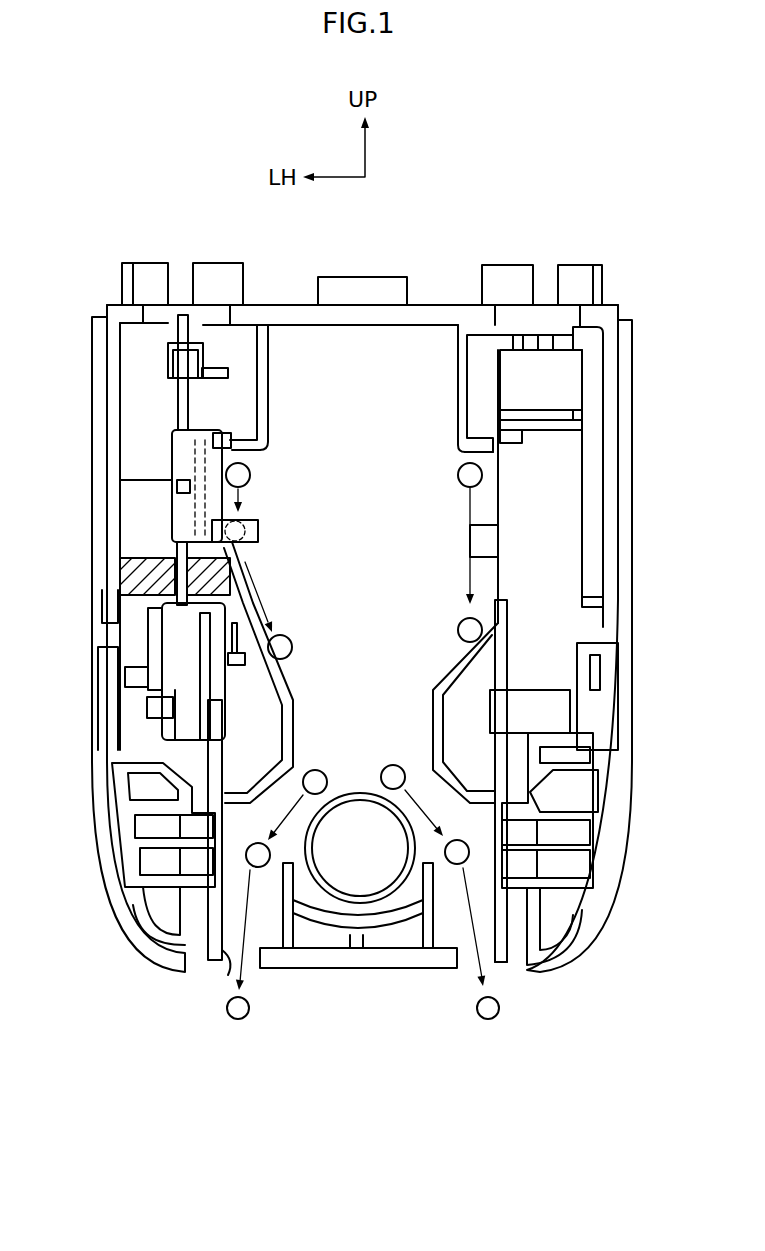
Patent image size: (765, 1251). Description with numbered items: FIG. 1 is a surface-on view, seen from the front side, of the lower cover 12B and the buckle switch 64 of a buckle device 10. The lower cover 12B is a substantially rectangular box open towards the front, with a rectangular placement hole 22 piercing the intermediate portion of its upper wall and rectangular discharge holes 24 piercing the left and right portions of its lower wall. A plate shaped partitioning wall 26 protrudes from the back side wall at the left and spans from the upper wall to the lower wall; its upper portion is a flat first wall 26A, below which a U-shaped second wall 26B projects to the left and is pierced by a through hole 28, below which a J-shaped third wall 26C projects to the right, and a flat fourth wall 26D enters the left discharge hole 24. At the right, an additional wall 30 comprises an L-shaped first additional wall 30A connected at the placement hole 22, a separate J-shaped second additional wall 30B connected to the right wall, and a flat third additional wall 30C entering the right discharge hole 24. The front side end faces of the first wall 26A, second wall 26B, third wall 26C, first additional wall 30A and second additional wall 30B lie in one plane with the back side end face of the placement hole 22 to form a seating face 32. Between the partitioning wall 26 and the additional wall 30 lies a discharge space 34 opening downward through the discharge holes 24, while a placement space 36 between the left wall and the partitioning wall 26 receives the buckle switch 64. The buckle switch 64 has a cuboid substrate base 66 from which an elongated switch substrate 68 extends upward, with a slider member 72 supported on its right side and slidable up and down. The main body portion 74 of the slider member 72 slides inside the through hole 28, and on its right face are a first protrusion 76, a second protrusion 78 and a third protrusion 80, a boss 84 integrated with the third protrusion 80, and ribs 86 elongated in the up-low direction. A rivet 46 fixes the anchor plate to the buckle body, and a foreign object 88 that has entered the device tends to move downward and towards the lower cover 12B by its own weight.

The buckle device 10 is at (92, 220).
The lower cover 12B is at (620, 304).
The placement hole 22 is at (232, 318).
The discharge hole 24 is at (257, 962).
The partitioning wall 26 is at (268, 366).
The first wall 26A is at (268, 410).
The second wall 26B is at (245, 452).
The third wall 26C is at (281, 670).
The fourth wall 26D is at (222, 962).
The through hole 28 is at (225, 445).
The additional wall 30 is at (458, 368).
The first additional wall 30A is at (460, 450).
The second additional wall 30B is at (410, 768).
The third additional wall 30C is at (495, 958).
The seating face 32 is at (372, 327).
The discharge space 34 is at (363, 445).
The placement space 36 is at (135, 433).
The rivet 46 is at (355, 900).
The buckle switch 64 is at (140, 708).
The substrate base 66 is at (162, 632).
The switch substrate 68 is at (178, 385).
The slider member 72 is at (172, 432).
The main body portion 74 is at (172, 452).
The first protrusion 76 is at (205, 437).
The second protrusion 78 is at (250, 475).
The third protrusion 80 is at (222, 530).
The boss 84 is at (260, 532).
The rib 86 is at (190, 487).
The foreign object 88 is at (250, 492).